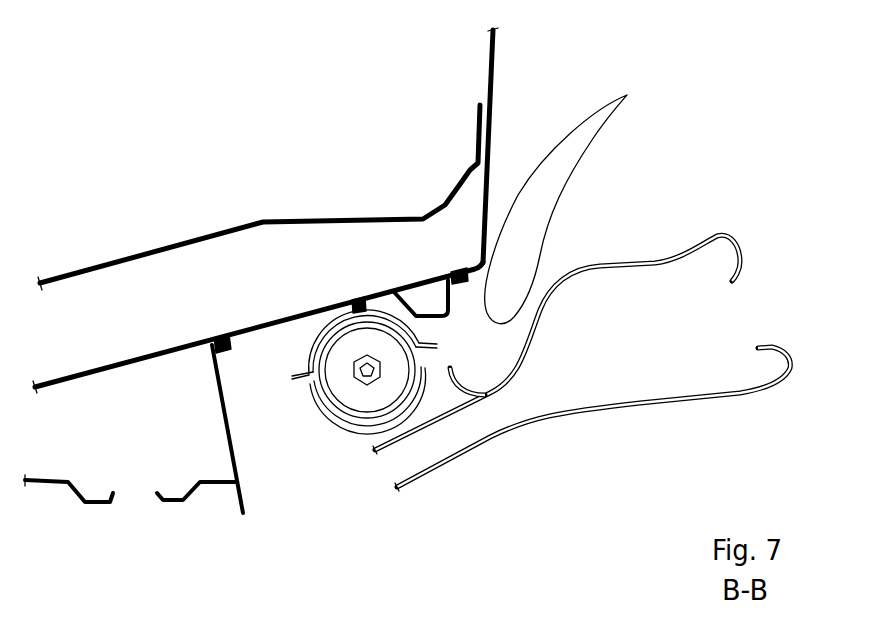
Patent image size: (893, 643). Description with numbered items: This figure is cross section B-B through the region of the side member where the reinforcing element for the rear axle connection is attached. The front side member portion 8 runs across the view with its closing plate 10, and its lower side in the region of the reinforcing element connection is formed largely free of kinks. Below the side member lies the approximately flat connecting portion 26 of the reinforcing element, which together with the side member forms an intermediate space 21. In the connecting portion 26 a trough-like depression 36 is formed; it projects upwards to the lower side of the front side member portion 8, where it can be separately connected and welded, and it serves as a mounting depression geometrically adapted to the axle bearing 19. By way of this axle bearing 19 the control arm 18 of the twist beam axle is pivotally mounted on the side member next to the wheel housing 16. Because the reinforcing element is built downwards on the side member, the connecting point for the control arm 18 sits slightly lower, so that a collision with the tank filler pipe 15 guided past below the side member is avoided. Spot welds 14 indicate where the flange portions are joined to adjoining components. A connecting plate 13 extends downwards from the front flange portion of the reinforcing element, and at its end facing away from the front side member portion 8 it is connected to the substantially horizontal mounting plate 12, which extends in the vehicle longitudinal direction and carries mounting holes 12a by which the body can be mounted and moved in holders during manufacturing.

The front side member portion 8 is at (140, 360).
The closing plate 10 is at (148, 252).
The mounting plate 12 is at (87, 505).
The mounting holes 12a is at (137, 493).
The connecting plate 13 is at (230, 443).
The spot welds 14 is at (225, 337).
The tank filler pipe 15 is at (572, 127).
The wheel housing 16 is at (488, 66).
The control arm 18 is at (593, 400).
The axle bearing 19 is at (348, 400).
The intermediate space 21 is at (288, 330).
The connecting portion 26 is at (273, 357).
The trough-like depression 36 is at (408, 308).